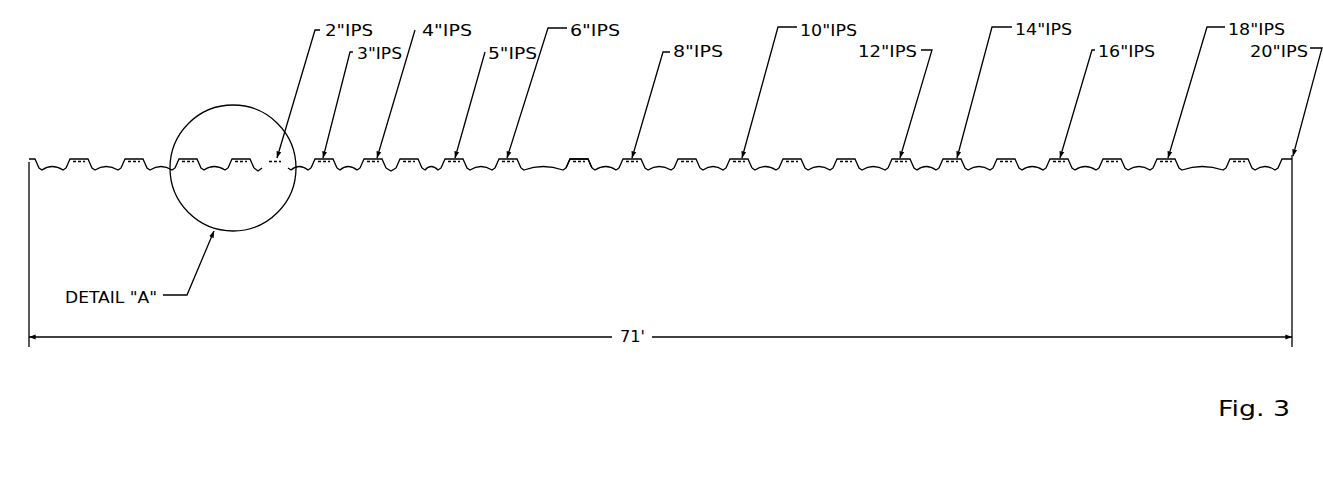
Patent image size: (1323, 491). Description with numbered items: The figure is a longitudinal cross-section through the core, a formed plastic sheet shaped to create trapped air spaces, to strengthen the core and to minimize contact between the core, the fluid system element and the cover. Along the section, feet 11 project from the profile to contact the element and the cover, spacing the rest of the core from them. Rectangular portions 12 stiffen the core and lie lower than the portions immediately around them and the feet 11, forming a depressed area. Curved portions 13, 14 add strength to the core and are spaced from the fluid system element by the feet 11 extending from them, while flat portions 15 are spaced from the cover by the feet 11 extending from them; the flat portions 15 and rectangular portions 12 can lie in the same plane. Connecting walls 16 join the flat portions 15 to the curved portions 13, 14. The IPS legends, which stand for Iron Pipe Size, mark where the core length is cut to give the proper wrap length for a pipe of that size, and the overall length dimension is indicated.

The feet 11 is at (82, 157).
The rectangular portions 12 is at (575, 158).
The curved portion 13 is at (543, 172).
The curved portion 14 is at (390, 172).
The flat portions 15 is at (236, 166).
The connecting walls 16 is at (330, 172).